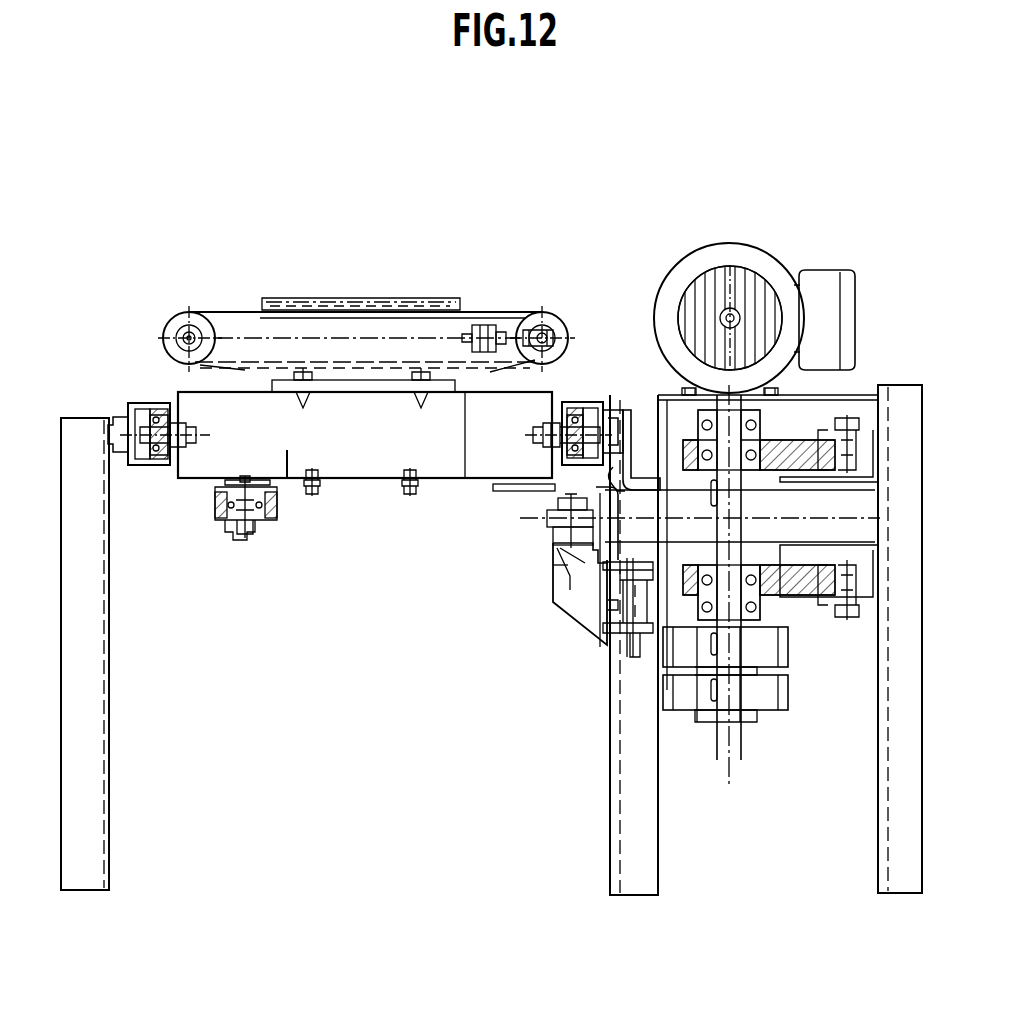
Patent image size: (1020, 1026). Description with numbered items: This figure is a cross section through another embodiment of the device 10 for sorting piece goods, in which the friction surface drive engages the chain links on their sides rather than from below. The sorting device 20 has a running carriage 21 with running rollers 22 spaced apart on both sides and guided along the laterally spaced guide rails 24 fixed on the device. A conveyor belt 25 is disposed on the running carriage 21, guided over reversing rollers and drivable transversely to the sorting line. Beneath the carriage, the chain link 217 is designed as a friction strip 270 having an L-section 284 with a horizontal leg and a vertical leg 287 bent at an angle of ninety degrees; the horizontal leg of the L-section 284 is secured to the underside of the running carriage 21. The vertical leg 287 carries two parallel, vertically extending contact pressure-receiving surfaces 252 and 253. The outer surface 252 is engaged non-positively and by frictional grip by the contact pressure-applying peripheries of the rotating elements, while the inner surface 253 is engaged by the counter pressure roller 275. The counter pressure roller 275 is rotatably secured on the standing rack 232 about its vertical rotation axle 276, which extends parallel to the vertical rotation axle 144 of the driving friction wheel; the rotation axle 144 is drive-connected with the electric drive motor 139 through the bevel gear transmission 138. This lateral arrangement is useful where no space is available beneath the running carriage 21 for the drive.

The device 10 is at (438, 190).
The sorting device 20 is at (498, 303).
The running carriage 21 is at (197, 403).
The running roller 22 is at (153, 466).
The guide rail 24 is at (140, 404).
The conveyor belt 25 is at (241, 311).
The bevel gear transmission 138 is at (818, 386).
The electric drive motor 139 is at (752, 255).
The rotation axle 144 is at (728, 775).
The chain link 217 is at (540, 498).
The standing rack 232 is at (628, 789).
The contact pressure-receiving surface 252 is at (614, 478).
The contact pressure-receiving surface 253 is at (592, 500).
The friction strip 270 is at (592, 574).
The counter pressure roller 275 is at (556, 528).
The rotation axle 276 is at (556, 588).
The L-section 284 is at (512, 519).
The vertical leg 287 is at (560, 555).